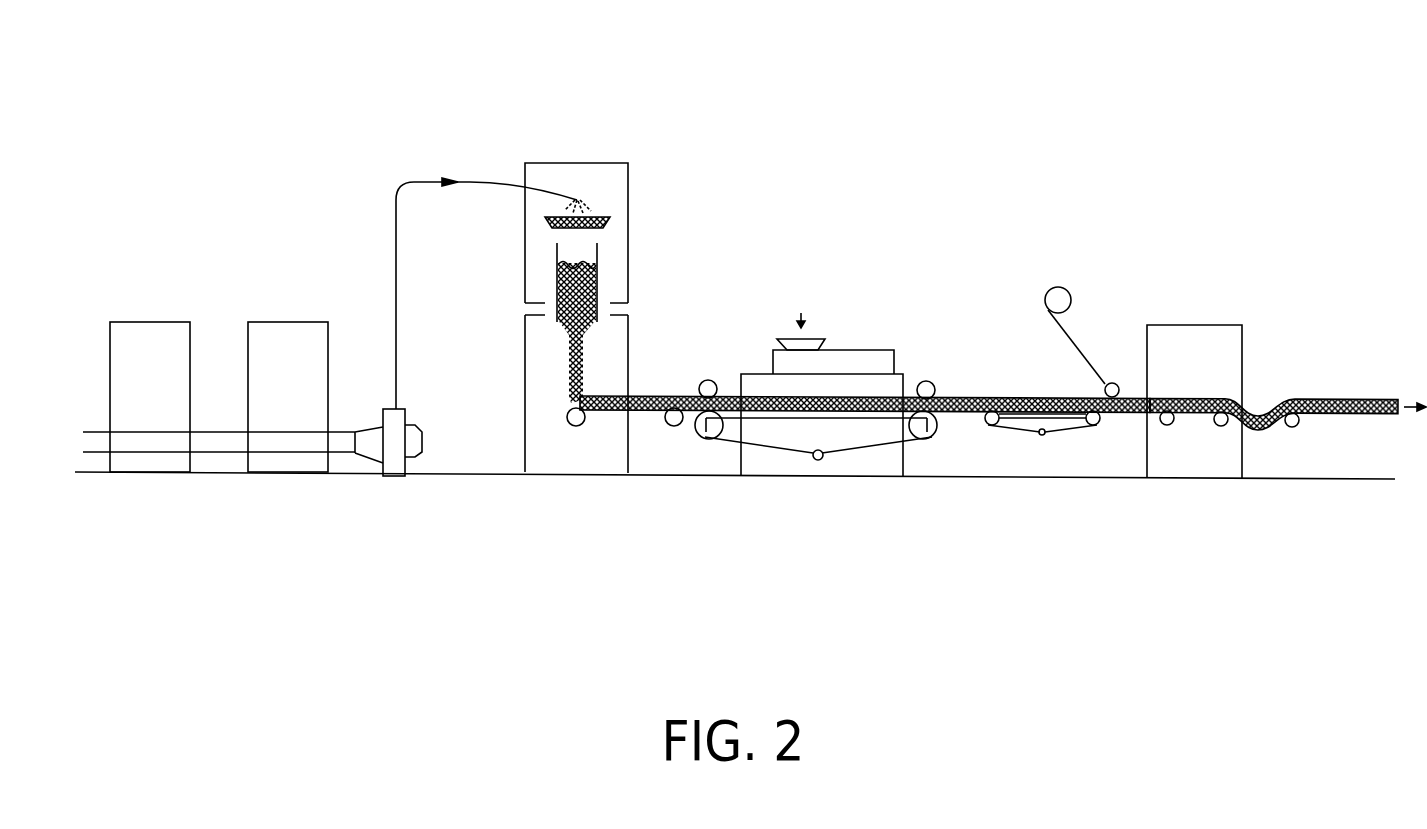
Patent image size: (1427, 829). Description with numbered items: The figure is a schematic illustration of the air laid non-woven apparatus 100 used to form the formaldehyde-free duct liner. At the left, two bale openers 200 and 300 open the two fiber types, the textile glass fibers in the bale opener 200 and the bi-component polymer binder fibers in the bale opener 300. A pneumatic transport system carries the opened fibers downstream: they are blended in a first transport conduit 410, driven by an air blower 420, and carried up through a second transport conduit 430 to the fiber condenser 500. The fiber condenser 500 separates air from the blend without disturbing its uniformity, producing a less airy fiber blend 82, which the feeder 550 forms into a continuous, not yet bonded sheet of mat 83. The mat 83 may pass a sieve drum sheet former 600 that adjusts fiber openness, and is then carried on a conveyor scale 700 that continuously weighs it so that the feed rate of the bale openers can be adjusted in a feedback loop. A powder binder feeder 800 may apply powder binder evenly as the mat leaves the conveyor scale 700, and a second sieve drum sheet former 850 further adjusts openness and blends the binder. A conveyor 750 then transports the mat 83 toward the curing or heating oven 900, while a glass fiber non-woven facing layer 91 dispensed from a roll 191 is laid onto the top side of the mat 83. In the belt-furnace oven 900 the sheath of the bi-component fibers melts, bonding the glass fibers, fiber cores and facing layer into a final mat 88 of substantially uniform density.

The apparatus 100 is at (623, 48).
The bale opener 200 is at (147, 320).
The bale opener 300 is at (285, 320).
The first transport conduit 410 is at (218, 447).
The air blower 420 is at (413, 453).
The second transport conduit 430 is at (495, 182).
The fiber condenser 500 is at (630, 202).
The feeder 550 is at (628, 342).
The fiber blend 82 is at (557, 282).
The mat 83 is at (958, 397).
The sieve drum sheet former 600 is at (708, 380).
The conveyor scale 700 is at (870, 457).
The powder binder feeder 800 is at (867, 350).
The second sieve drum sheet former 850 is at (937, 428).
The conveyor 750 is at (1052, 435).
The roll 191 is at (1062, 288).
The non-woven facing layer 91 is at (1077, 345).
The curing or heating oven 900 is at (1207, 325).
The final mat 88 is at (1343, 397).